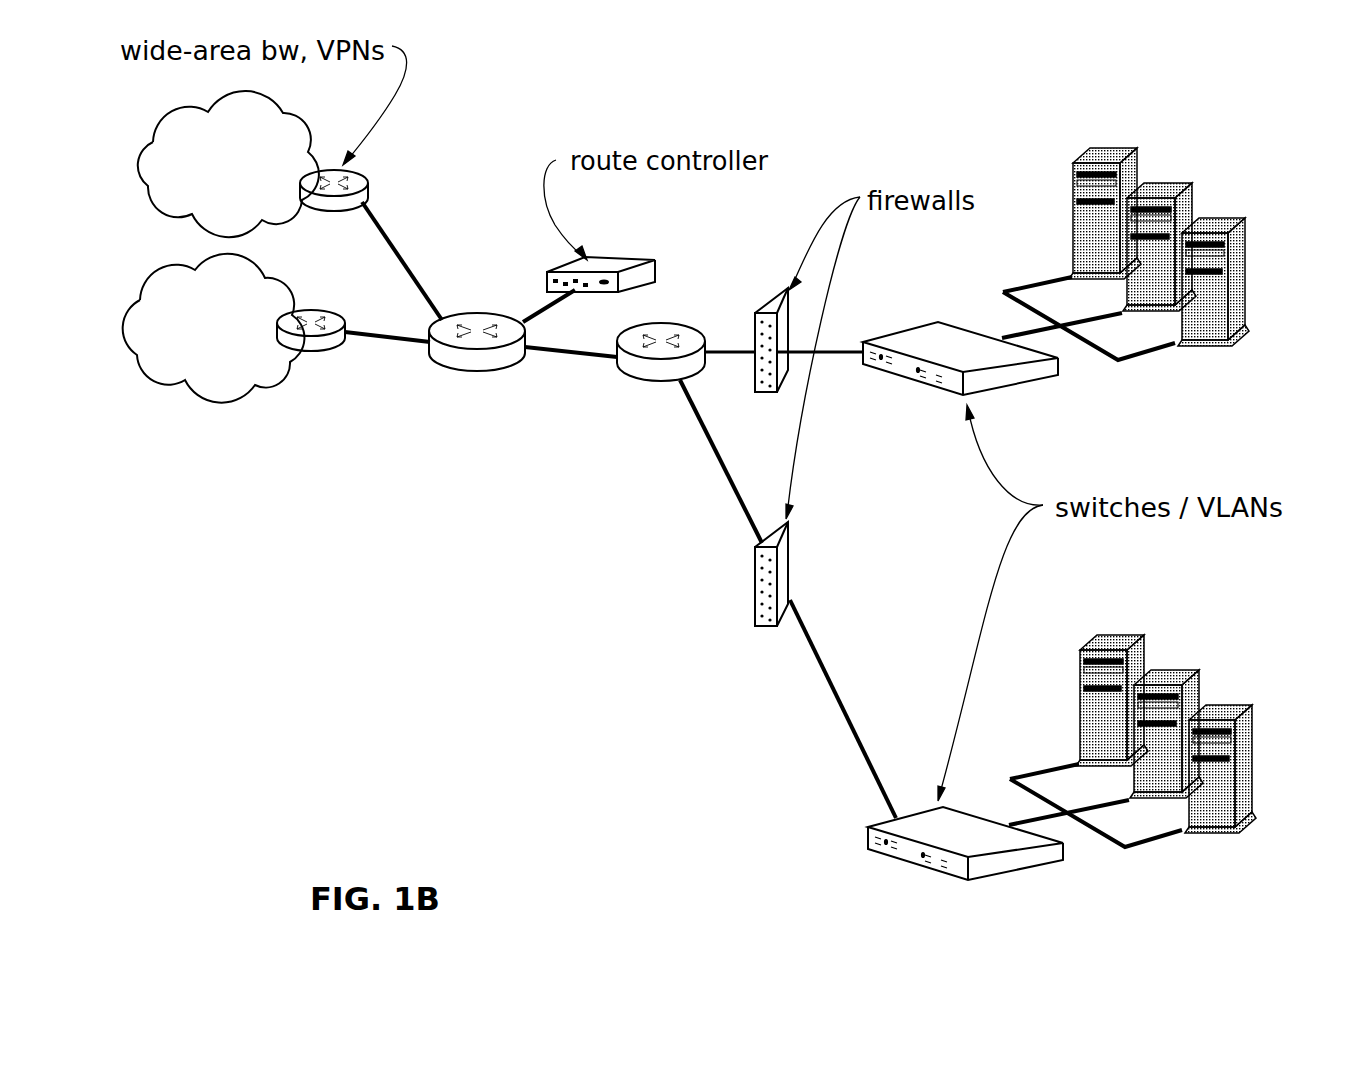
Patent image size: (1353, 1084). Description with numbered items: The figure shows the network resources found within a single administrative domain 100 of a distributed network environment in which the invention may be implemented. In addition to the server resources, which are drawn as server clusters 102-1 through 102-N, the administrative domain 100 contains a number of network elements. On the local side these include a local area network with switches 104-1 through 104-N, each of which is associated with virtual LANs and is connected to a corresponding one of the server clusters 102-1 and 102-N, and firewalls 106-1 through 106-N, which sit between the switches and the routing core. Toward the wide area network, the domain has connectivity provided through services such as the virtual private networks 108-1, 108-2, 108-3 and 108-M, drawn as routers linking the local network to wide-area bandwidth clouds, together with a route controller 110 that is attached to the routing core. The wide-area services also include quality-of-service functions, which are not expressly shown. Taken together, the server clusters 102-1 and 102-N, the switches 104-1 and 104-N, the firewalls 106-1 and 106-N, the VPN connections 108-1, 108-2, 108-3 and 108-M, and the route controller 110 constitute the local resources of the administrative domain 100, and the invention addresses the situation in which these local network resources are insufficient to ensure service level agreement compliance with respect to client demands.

The administrative domain 100 is at (1347, 85).
The server cluster 102-1 is at (1190, 200).
The server cluster 102-N is at (1195, 688).
The switch 104-1 is at (887, 333).
The switch 104-N is at (868, 838).
The firewall 106-1 is at (780, 297).
The firewall 106-N is at (790, 560).
The virtual private network 108-1 is at (655, 385).
The virtual private network 108-2 is at (490, 375).
The virtual private network 108-3 is at (333, 355).
The virtual private network 108-M is at (368, 181).
The route controller 110 is at (547, 282).